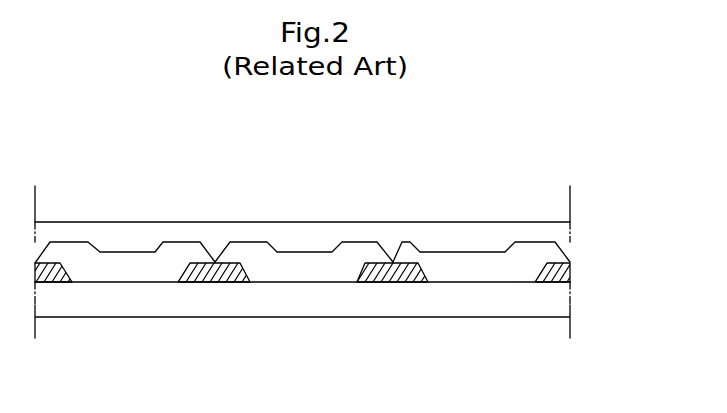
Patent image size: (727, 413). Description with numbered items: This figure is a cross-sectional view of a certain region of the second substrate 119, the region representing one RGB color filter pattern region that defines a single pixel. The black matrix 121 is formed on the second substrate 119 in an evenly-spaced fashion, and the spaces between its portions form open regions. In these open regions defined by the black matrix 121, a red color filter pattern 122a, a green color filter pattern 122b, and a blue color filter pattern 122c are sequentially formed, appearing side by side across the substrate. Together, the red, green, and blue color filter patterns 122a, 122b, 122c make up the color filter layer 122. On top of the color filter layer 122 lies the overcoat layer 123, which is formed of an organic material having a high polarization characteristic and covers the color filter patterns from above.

The second substrate 119 is at (568, 303).
The black matrix 121 is at (52, 283).
The color filter layer 122 is at (302, 202).
The red color filter pattern 122a is at (172, 250).
The green color filter pattern 122b is at (350, 250).
The blue color filter pattern 122c is at (481, 225).
The overcoat layer 123 is at (562, 233).